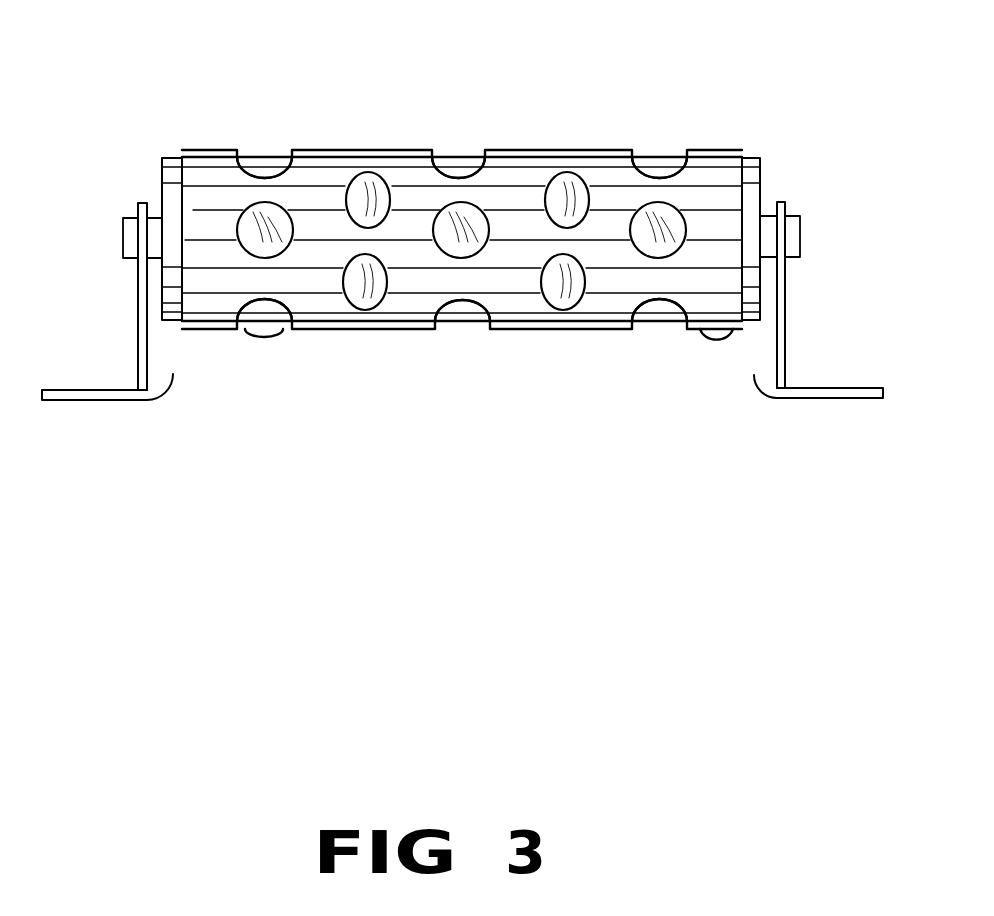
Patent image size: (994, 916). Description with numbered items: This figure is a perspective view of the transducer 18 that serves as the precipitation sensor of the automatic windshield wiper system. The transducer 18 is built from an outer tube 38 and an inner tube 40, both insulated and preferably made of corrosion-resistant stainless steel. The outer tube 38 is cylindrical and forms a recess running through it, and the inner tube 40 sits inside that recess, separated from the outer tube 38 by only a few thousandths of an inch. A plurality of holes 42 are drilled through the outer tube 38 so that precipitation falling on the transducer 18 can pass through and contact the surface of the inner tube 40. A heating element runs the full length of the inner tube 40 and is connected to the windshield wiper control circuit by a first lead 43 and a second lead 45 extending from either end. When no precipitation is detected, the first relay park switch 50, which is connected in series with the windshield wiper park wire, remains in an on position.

The transducer 18 is at (502, 318).
The outer tube 38 is at (218, 187).
The inner tube 40 is at (463, 167).
The holes 42 is at (352, 188).
The first lead 43 is at (173, 374).
The second lead 45 is at (754, 375).
The first relay park switch 50 is at (683, 218).